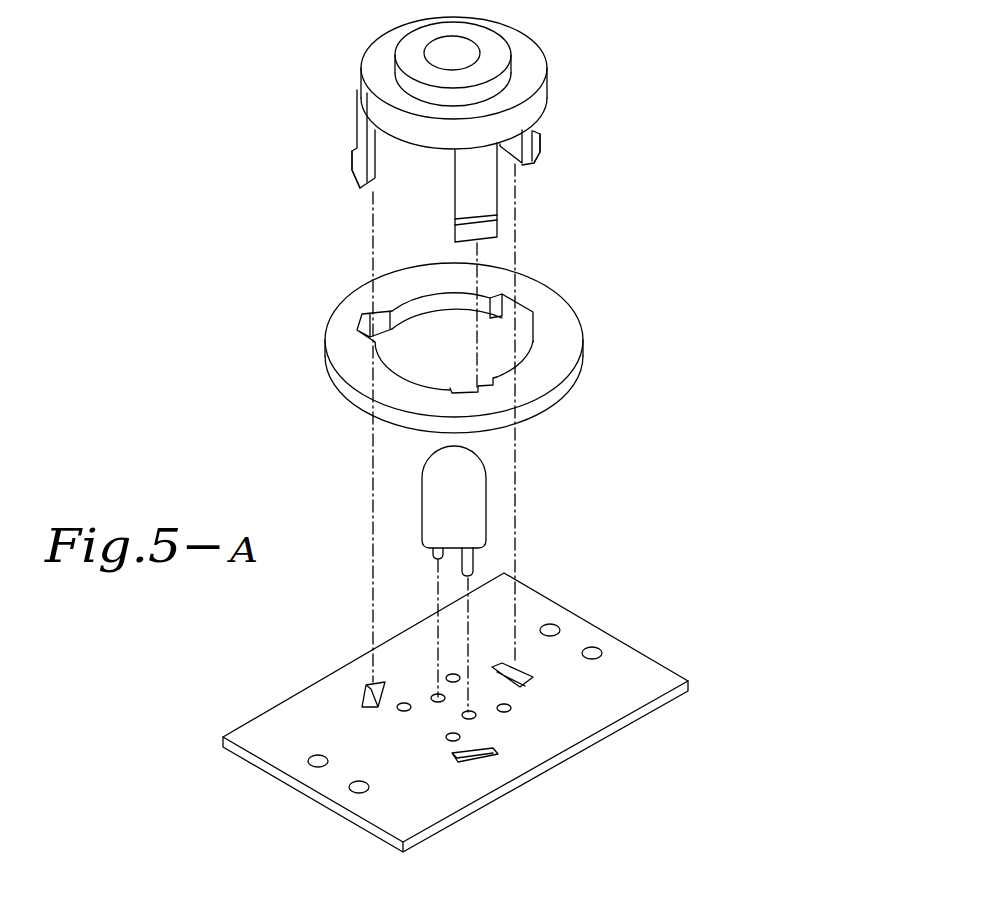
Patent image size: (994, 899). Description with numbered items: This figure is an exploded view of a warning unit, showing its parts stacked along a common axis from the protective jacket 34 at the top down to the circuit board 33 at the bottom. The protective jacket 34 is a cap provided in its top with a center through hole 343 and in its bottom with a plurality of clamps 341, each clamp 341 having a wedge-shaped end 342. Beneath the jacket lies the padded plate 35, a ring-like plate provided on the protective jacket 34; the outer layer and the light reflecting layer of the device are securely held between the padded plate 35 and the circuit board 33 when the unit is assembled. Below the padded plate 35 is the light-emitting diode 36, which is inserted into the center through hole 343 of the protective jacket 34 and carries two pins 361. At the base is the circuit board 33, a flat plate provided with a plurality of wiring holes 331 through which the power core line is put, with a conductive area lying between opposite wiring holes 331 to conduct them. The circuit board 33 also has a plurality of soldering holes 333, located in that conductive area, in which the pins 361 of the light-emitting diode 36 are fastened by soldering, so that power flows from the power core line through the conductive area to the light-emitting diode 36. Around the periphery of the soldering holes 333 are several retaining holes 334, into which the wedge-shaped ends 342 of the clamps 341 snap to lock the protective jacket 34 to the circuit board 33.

The circuit board 33 is at (459, 720).
The wiring holes 331 is at (558, 622).
The soldering holes 333 is at (412, 715).
The retaining holes 334 is at (367, 692).
The protective jacket 34 is at (446, 129).
The clamps 341 is at (357, 134).
The wedge-shaped end 342 is at (352, 172).
The center through hole 343 is at (463, 52).
The padded plate 35 is at (563, 317).
The light-emitting diode 36 is at (454, 511).
The pins 361 is at (433, 556).